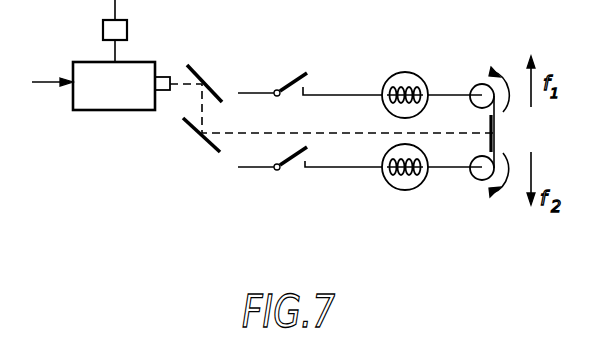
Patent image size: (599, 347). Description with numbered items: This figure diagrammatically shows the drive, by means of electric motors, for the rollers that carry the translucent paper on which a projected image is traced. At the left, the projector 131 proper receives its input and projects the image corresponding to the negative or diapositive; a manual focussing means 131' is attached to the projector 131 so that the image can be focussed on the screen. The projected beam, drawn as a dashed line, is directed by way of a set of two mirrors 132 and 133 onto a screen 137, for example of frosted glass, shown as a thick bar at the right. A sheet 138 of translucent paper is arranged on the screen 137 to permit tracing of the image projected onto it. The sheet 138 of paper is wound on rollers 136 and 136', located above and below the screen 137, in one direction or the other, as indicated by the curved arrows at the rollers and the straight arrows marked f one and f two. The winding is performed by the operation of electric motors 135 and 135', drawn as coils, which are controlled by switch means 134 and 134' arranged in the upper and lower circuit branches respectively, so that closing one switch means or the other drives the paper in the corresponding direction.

The projector 131 is at (101, 86).
The manual focussing means 131' is at (137, 31).
The mirror 132 is at (216, 90).
The mirror 133 is at (200, 147).
The switch means 134 is at (310, 72).
The switch means 134' is at (310, 176).
The electric motor 135 is at (412, 85).
The electric motor 135' is at (416, 181).
The roller 136 is at (478, 83).
The roller 136' is at (486, 197).
The screen 137 is at (497, 122).
The sheet of translucent paper 138 is at (498, 140).